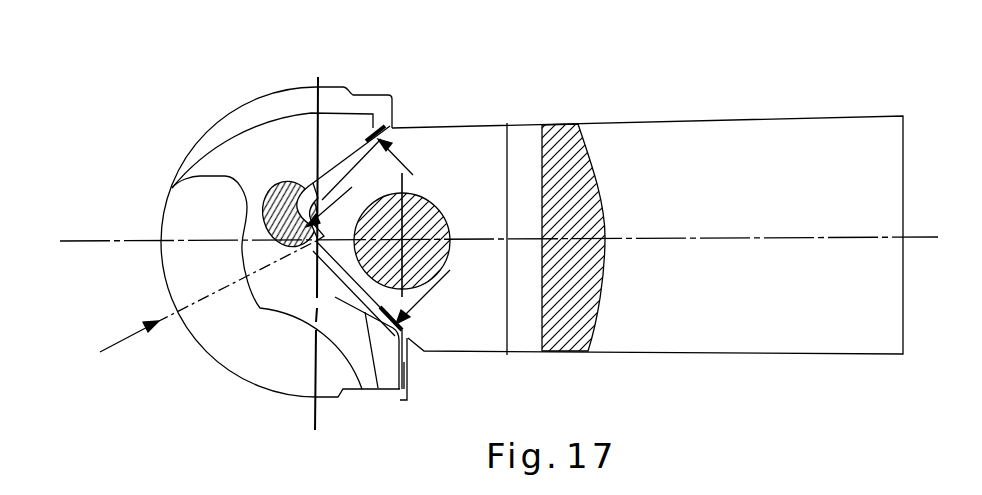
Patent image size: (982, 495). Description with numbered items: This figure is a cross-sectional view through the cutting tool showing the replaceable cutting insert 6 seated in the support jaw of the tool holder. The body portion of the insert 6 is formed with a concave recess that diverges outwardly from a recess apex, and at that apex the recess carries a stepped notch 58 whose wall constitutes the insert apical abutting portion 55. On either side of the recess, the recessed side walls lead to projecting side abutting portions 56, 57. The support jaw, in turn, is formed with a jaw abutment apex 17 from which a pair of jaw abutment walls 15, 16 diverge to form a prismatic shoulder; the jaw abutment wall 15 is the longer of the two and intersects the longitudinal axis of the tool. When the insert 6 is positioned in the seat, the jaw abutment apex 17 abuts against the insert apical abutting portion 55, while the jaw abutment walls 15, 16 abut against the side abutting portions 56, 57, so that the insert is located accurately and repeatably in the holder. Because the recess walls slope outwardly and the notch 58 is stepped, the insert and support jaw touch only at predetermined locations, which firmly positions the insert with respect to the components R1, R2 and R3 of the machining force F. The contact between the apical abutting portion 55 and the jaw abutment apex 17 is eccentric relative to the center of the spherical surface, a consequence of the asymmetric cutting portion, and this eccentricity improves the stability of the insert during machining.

The cutting insert 6 is at (193, 223).
The jaw abutment apex 17 is at (273, 183).
The notch 58 is at (287, 180).
The jaw abutment wall 16 is at (364, 140).
The side abutting portion 57 is at (388, 132).
The side abutting portion 56 is at (407, 395).
The component of machining force R1 is at (416, 163).
The component of machining force R2 is at (441, 291).
The component of machining force R3 is at (348, 193).
The machining force F is at (198, 306).
The insert apical abutting portion 55 is at (316, 241).
The jaw abutment wall 15 is at (300, 253).